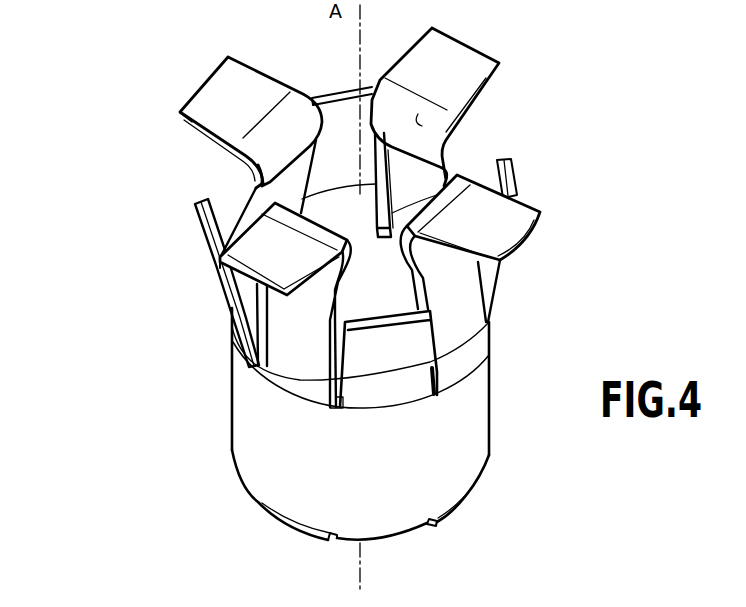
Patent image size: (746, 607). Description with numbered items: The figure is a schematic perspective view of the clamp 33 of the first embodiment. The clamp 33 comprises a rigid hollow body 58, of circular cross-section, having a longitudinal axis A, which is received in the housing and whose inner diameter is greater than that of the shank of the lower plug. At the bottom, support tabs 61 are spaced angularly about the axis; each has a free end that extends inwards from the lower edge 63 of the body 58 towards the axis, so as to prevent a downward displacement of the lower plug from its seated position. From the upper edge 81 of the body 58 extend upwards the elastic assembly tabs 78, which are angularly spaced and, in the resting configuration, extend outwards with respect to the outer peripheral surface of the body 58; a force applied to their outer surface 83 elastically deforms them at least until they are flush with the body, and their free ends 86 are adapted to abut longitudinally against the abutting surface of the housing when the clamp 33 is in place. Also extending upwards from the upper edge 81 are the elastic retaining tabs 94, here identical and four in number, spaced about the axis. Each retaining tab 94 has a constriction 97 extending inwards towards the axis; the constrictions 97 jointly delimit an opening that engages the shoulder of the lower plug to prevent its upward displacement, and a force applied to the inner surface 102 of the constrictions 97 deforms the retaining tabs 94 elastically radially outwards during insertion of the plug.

The clamp 33 is at (310, 296).
The hollow body 58 is at (232, 404).
The support tab 61 is at (289, 527).
The lower edge 63 is at (241, 482).
The elastic assembly tab 78 is at (227, 300).
The upper edge 81 is at (429, 383).
The outer surface 83 is at (215, 282).
The free end 86 is at (329, 97).
The elastic retaining tab 94 is at (197, 126).
The constriction 97 is at (252, 176).
The inner surface 102 is at (422, 126).